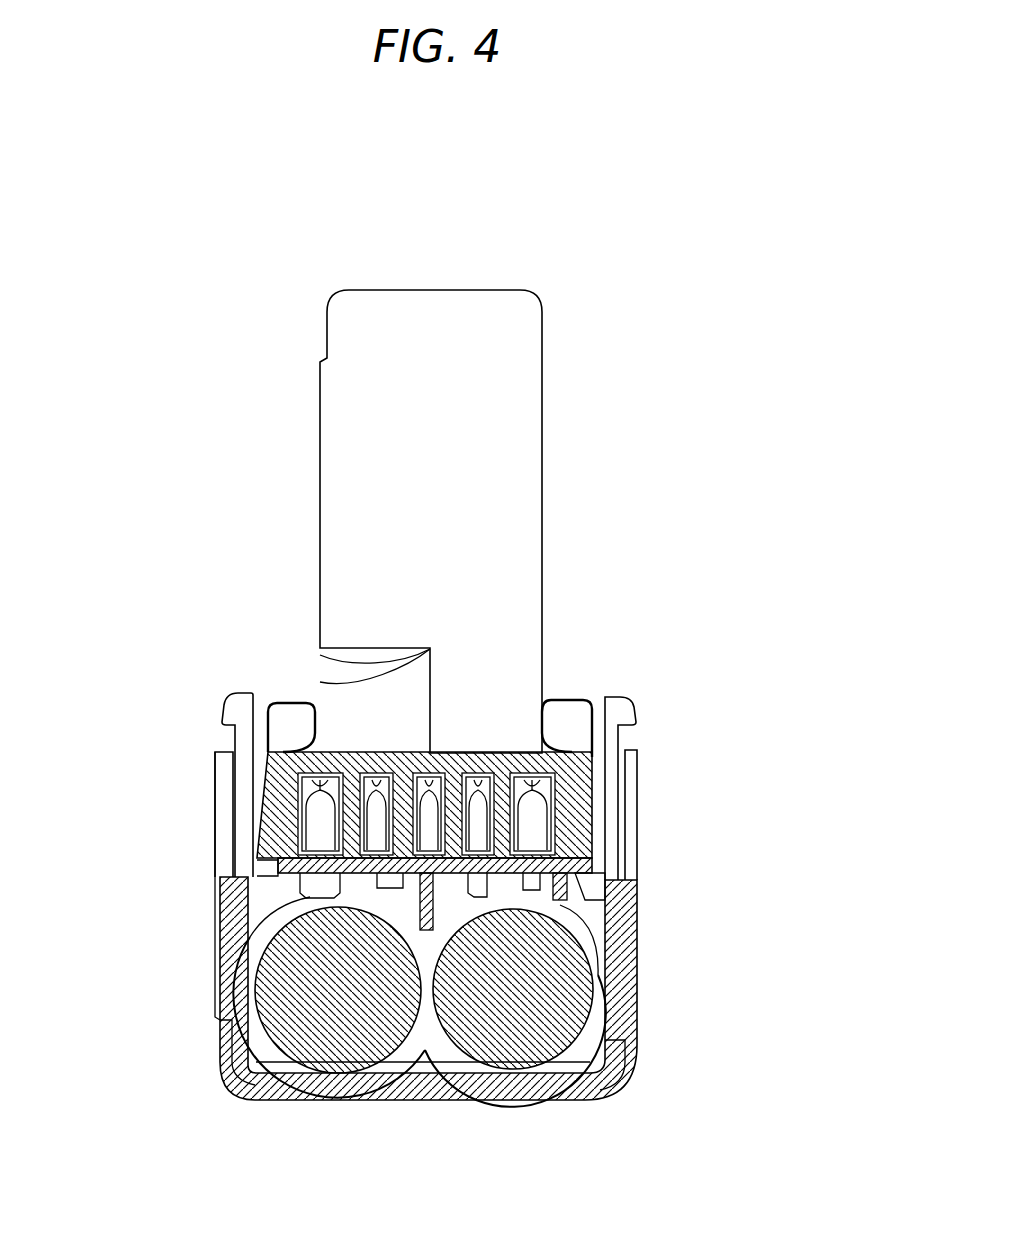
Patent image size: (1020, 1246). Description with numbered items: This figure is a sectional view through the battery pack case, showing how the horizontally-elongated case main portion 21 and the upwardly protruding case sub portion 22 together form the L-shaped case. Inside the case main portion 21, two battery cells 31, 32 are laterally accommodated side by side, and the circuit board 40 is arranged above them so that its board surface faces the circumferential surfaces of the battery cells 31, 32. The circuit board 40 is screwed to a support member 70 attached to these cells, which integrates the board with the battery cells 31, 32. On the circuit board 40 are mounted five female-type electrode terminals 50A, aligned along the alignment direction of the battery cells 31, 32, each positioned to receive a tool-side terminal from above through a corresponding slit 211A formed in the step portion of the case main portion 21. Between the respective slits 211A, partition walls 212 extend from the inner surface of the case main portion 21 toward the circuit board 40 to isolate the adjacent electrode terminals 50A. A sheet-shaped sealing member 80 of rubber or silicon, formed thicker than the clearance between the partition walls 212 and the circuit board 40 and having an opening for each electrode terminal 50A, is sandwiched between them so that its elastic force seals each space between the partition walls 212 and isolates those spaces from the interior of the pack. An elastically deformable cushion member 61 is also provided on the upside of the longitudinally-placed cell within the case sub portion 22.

The case sub portion 22 is at (432, 325).
The slits 211A is at (475, 757).
The electrode terminals 50A is at (565, 770).
The partition walls 212 is at (608, 830).
The circuit board 40 is at (270, 877).
The sealing member 80 is at (600, 880).
The case main portion 21 is at (217, 965).
The support member 70 is at (635, 982).
The battery cell 32 is at (220, 1040).
The battery cell 31 is at (615, 1040).
The cushion member 61 is at (600, 1093).